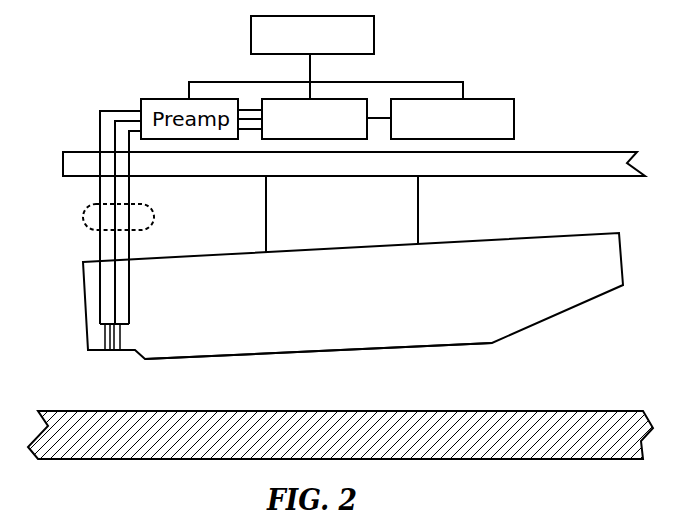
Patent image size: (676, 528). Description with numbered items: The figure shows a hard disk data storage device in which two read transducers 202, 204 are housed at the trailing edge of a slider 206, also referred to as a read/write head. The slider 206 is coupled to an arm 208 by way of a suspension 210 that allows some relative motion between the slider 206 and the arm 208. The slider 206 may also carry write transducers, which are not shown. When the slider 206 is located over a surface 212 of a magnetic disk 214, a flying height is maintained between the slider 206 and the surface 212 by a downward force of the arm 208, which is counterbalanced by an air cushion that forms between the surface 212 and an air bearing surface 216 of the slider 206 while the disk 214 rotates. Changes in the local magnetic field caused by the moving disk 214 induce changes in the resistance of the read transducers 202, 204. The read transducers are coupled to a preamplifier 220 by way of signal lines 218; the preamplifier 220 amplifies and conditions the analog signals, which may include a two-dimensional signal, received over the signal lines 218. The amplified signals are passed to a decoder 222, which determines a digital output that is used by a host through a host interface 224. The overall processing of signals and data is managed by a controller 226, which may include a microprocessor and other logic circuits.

The read transducer 202 is at (107, 352).
The read transducer 204 is at (118, 352).
The slider 206 is at (530, 246).
The arm 208 is at (573, 157).
The suspension 210 is at (418, 207).
The surface 212 is at (532, 411).
The magnetic disk 214 is at (508, 447).
The air bearing surface 216 is at (373, 345).
The signal lines 218 is at (92, 205).
The preamplifier 220 is at (157, 99).
The decoder 222 is at (287, 99).
The host interface 224 is at (481, 99).
The controller 226 is at (250, 42).